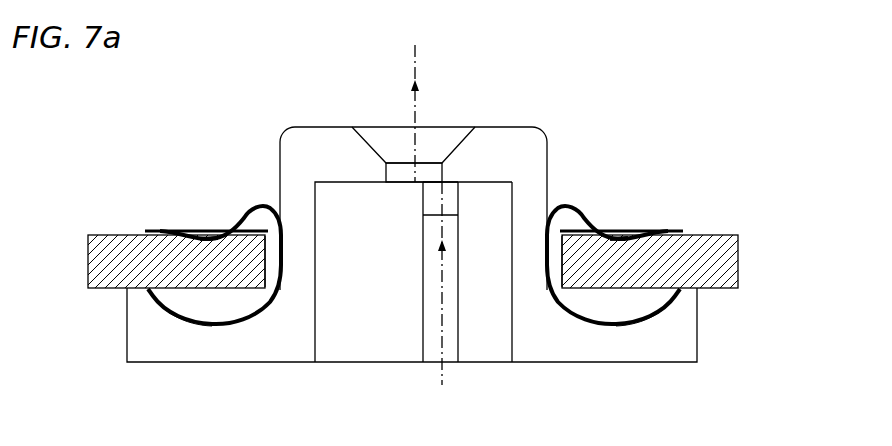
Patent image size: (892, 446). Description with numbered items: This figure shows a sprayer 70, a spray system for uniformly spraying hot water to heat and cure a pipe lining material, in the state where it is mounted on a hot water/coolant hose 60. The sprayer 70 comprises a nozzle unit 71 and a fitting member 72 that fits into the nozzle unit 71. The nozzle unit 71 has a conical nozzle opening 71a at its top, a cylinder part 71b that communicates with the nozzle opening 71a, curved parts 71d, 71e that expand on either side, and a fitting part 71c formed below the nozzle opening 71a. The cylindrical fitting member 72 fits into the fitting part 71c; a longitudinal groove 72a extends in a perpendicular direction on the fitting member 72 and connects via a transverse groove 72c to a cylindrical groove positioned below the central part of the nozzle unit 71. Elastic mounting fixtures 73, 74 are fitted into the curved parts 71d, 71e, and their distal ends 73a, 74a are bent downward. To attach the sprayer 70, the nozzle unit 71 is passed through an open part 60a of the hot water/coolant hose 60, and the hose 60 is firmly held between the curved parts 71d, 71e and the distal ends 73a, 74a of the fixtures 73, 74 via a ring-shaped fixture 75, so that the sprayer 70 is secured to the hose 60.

The hot water/coolant hose 60 is at (102, 235).
The open part 60a is at (273, 291).
The sprayer 70 is at (517, 93).
The nozzle unit 71 is at (401, 164).
The nozzle opening 71a is at (445, 140).
The cylinder part 71b is at (402, 173).
The fitting part 71c is at (513, 317).
The curved part 71d is at (217, 327).
The curved part 71e is at (638, 325).
The fitting member 72 is at (449, 272).
The longitudinal groove 72a is at (448, 320).
The transverse groove 72c is at (443, 198).
The mounting fixture 73 is at (214, 221).
The distal end 73a is at (208, 232).
The mounting fixture 74 is at (613, 223).
The distal end 74a is at (612, 231).
The ring-shaped fixture 75 is at (163, 229).